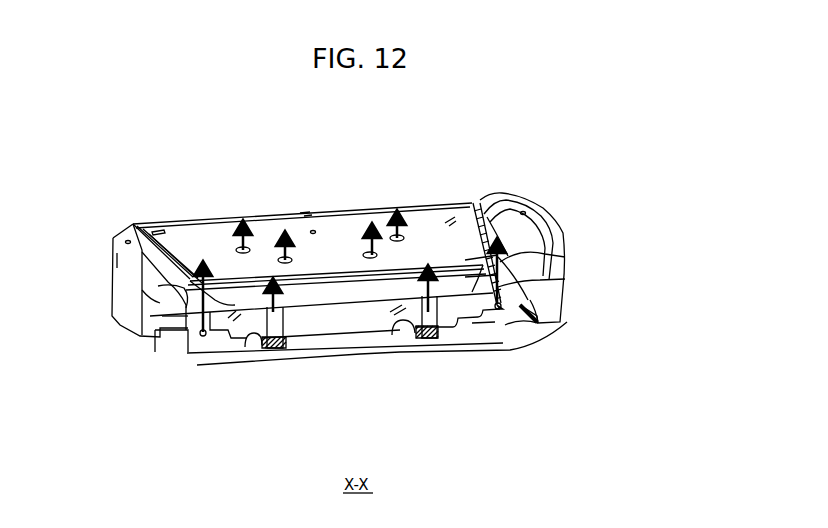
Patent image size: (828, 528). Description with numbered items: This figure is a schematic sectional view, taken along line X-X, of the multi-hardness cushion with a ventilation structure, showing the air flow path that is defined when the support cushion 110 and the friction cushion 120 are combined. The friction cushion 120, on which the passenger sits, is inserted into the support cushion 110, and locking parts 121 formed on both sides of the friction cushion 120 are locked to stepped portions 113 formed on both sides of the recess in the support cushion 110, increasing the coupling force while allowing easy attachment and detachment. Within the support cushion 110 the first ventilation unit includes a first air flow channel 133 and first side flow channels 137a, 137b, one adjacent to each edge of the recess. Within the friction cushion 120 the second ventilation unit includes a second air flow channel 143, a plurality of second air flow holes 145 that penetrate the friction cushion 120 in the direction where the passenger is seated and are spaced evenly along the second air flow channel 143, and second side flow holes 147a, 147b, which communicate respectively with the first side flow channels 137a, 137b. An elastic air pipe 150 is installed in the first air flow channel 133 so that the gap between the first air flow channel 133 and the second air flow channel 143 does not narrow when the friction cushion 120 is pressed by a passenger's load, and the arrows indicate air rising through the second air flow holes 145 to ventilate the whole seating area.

The support cushion 110 is at (367, 348).
The stepped portion 113 is at (504, 312).
The friction cushion 120 is at (447, 222).
The locking part 121 is at (528, 281).
The first air flow channel 133 is at (266, 348).
The 1a side flow channel 137a is at (505, 316).
The 1b side flow channel 137b is at (200, 340).
The second air flow channel 143 is at (250, 343).
The second air flow hole 145 is at (238, 247).
The 2a side flow hole 147a is at (501, 308).
The 2b side flow hole 147b is at (200, 333).
The elastic air pipe 150 is at (283, 345).